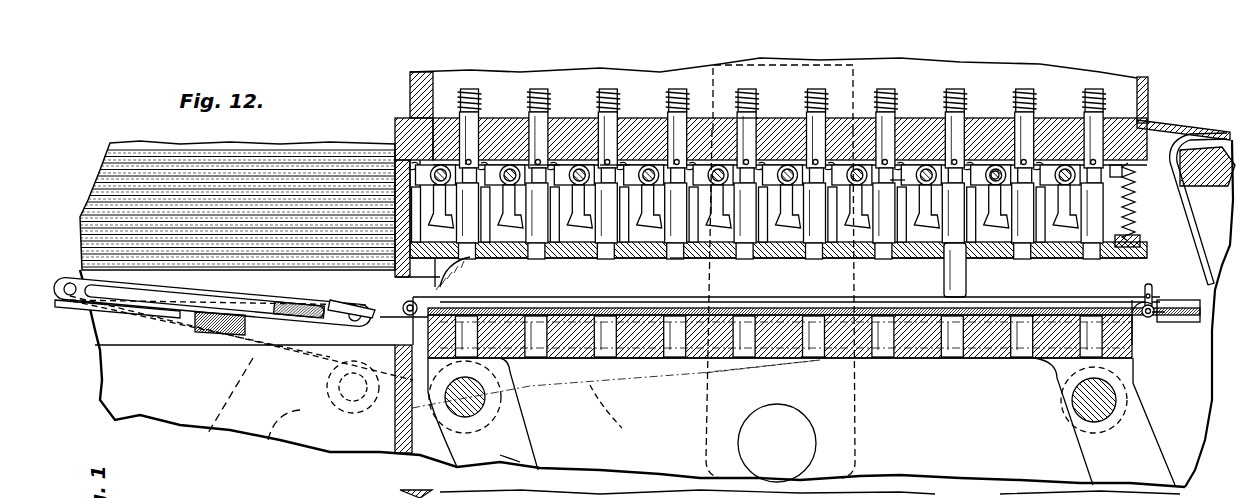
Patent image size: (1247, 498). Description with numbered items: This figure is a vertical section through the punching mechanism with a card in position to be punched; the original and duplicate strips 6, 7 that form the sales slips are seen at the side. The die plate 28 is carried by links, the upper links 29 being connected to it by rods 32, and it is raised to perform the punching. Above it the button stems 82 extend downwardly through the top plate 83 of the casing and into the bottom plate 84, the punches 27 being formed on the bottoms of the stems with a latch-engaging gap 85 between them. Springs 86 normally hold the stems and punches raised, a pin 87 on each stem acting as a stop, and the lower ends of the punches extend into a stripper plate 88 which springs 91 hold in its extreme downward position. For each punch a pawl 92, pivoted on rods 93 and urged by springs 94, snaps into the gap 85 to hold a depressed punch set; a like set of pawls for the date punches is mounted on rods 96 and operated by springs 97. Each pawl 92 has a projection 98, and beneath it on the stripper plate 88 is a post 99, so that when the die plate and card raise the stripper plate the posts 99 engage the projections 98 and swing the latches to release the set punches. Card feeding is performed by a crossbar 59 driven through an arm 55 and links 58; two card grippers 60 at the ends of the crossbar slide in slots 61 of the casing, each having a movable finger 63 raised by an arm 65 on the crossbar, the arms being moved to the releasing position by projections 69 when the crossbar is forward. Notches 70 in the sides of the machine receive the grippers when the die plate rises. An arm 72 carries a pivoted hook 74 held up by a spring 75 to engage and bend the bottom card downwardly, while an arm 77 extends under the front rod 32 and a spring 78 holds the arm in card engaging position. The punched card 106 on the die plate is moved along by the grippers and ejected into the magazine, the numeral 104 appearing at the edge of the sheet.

The original strip 6 is at (1222, 132).
The duplicate strip 7 is at (1211, 313).
The punches 27 is at (968, 284).
The die plate 28 is at (638, 358).
The upper links 29 is at (512, 458).
The rods 32 is at (490, 408).
The arm 55 is at (274, 434).
The links 58 is at (622, 417).
The crossbar 59 is at (1153, 342).
The card grippers 60 is at (1179, 323).
The slots 61 is at (836, 306).
The movable finger 63 is at (1150, 318).
The arm 65 is at (1156, 291).
The projections 69 is at (470, 264).
The notches 70 is at (1183, 256).
The arm 72 is at (215, 308).
The hook 74 is at (385, 322).
The spring 75 is at (320, 318).
The arm 77 is at (229, 408).
The spring 78 is at (92, 326).
The stems 82 is at (540, 90).
The top plate 83 is at (1149, 88).
The bottom plate 84 is at (708, 125).
The latch-engaging gap 85 is at (1130, 183).
The springs 86 is at (815, 108).
The pin 87 is at (542, 176).
The stripper plate 88 is at (790, 260).
The springs 91 is at (1133, 208).
The pawl 92 is at (920, 256).
The rods 93 is at (996, 172).
The springs 94 is at (903, 182).
The rods 96 is at (985, 488).
The springs 97 is at (953, 488).
The projection 98 is at (628, 168).
The post 99 is at (688, 262).
The part 104 is at (1212, 488).
The punched card 106 is at (612, 306).